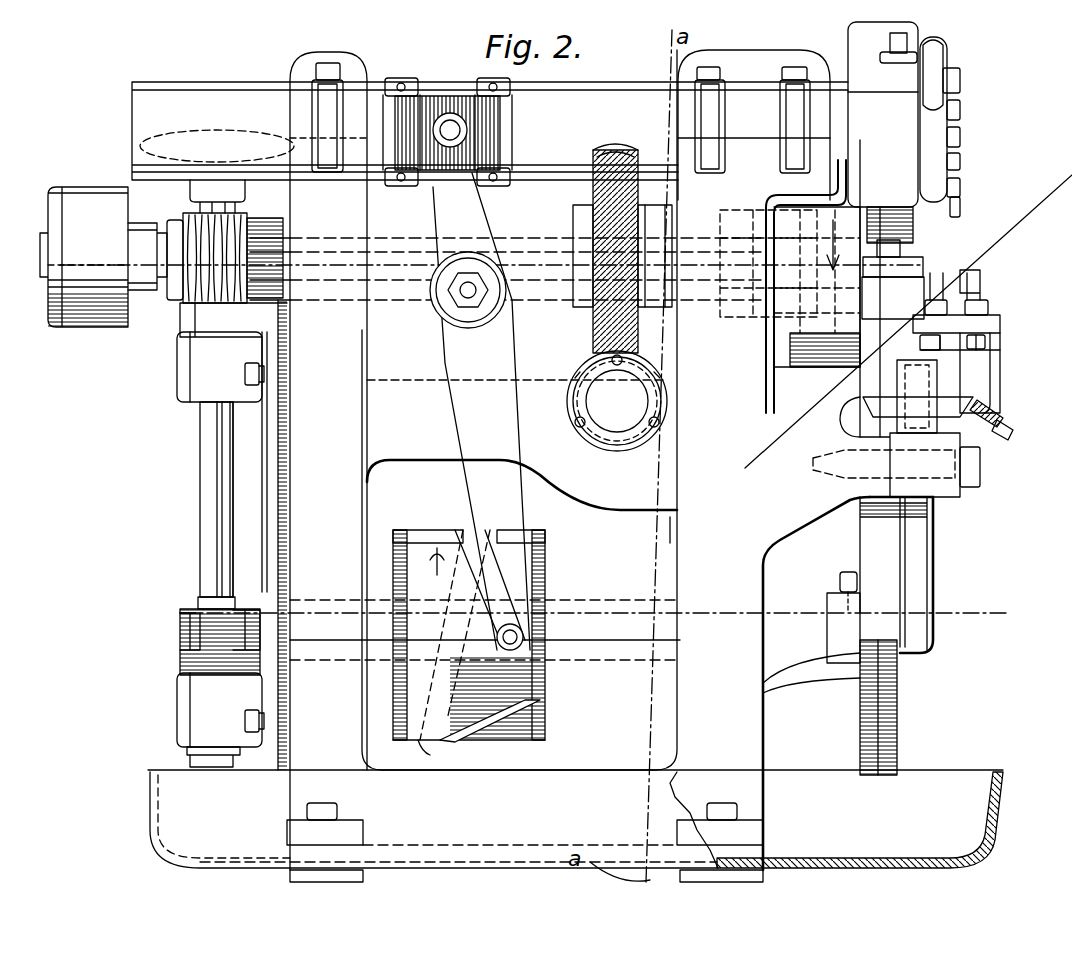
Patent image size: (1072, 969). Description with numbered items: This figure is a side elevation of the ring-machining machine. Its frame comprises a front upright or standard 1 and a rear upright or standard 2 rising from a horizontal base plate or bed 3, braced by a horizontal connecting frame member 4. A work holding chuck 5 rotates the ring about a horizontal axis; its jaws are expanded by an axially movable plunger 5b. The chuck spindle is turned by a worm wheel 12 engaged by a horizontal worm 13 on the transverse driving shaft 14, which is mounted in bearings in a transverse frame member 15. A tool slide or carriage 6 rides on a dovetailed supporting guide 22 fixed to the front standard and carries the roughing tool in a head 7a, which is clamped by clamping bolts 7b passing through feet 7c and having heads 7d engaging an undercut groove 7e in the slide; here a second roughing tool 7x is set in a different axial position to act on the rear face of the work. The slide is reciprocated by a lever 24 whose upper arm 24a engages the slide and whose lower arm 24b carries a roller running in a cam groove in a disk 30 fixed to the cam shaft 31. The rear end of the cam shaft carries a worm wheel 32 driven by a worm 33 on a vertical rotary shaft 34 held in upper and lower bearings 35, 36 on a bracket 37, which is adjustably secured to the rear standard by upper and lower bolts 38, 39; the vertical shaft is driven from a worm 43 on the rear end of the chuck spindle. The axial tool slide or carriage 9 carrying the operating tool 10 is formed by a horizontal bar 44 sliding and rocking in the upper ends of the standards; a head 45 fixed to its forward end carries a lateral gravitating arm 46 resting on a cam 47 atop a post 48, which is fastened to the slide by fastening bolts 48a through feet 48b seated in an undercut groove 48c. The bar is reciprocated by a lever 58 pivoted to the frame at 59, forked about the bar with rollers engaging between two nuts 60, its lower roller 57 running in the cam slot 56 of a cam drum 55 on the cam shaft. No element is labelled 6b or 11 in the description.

The front upright or standard 1 is at (773, 466).
The rear upright or standard 2 is at (322, 461).
The horizontal base plate or bed 3 is at (770, 852).
The horizontal connecting frame member 4 is at (519, 410).
The work holding chuck 5 is at (800, 322).
The plunger 5b is at (822, 290).
The tool slide or carriage 6 is at (980, 373).
The cam 6b is at (148, 152).
The head 7a is at (893, 298).
The clamping bolts 7b is at (950, 290).
The feet 7c is at (912, 333).
The heads 7d is at (905, 362).
The undercut groove 7e is at (962, 355).
The second roughing tool 7x is at (898, 331).
The horizontal tool slide or carriage 9 is at (883, 114).
The operating tool 10 is at (864, 222).
The main shaft 11 is at (490, 269).
The worm wheel 12 is at (593, 338).
The horizontal worm 13 is at (578, 377).
The horizontal transverse driving shaft 14 is at (604, 445).
The transverse frame member 15 is at (617, 423).
The horizontal transverse supporting guide 22 is at (947, 420).
The lever 24 is at (900, 580).
The upper arm of the lever 24a is at (880, 430).
The lower arm of the lever 24b is at (915, 578).
The disk 30 is at (897, 702).
The cam shaft 31 is at (626, 622).
The worm wheel 32 is at (198, 603).
The worm 33 is at (180, 618).
The vertical rotary shaft 34 is at (208, 512).
The upper bearing 35 is at (222, 462).
The lower bearing 36 is at (219, 720).
The bracket 37 is at (265, 452).
The upper bolt 38 is at (245, 372).
The lower bolt 39 is at (245, 720).
The worm 43 is at (185, 215).
The horizontal bar 44 is at (236, 72).
The head 45 is at (853, 58).
The lateral gravitating arm 46 is at (950, 92).
The cam 47 is at (958, 205).
The post 48 is at (965, 227).
The fastening bolts 48a is at (986, 304).
The feet 48b is at (986, 316).
The undercut groove 48c is at (986, 329).
The cam drum 55 is at (545, 712).
The cam slot 56 is at (433, 756).
The roller 57 is at (497, 650).
The lever 58 is at (470, 484).
The pivot 59 is at (455, 300).
The nuts 60 is at (470, 82).